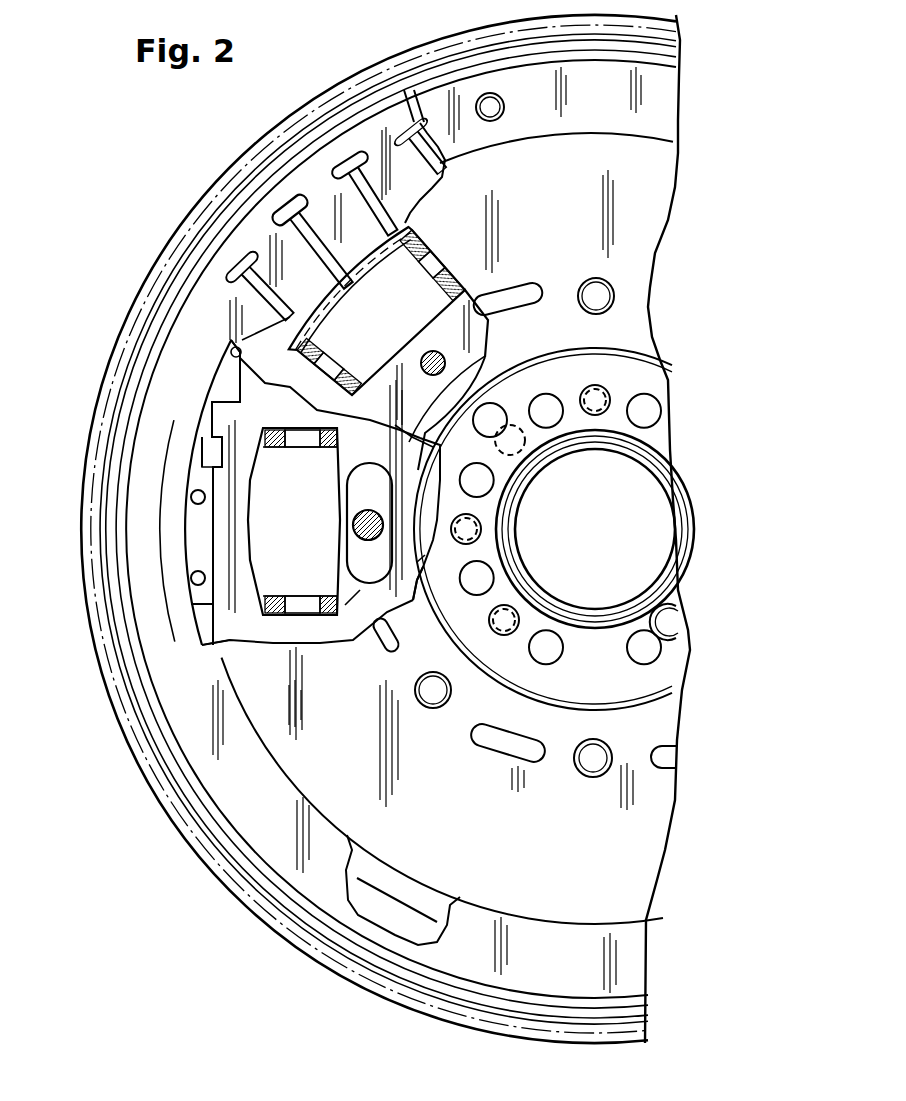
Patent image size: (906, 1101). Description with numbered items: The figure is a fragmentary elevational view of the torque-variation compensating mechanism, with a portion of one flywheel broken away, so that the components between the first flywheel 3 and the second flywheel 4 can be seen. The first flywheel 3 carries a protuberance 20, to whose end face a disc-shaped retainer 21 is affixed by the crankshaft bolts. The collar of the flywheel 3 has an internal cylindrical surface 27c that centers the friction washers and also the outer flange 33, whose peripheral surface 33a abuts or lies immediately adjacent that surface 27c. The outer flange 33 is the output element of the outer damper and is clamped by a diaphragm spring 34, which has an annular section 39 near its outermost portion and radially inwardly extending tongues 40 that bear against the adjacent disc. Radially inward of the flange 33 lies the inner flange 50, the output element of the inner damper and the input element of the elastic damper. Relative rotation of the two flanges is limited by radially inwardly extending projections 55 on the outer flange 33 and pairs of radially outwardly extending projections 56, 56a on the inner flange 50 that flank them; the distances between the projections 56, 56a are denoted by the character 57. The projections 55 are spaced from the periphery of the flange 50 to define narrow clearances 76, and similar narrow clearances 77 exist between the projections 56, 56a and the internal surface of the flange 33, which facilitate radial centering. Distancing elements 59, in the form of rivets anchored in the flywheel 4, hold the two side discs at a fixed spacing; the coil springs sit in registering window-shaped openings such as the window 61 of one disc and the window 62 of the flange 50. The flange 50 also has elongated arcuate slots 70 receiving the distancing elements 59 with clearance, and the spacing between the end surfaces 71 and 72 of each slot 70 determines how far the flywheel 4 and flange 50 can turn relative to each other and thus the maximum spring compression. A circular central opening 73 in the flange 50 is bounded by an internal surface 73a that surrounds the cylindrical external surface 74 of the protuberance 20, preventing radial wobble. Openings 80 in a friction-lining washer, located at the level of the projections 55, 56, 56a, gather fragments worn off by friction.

The first flywheel 3 is at (333, 101).
The second flywheel 4 is at (665, 97).
The protuberance 20 is at (427, 506).
The disc-shaped retainer 21 is at (630, 371).
The internal cylindrical surface 27c is at (212, 630).
The disc-shaped flange 33 is at (214, 642).
The peripheral surface 33a is at (165, 604).
The diaphragm spring 34 is at (302, 122).
The annular section 39 is at (408, 90).
The tongues 40 is at (405, 122).
The inner flange 50 is at (232, 342).
The radially inwardly extending projections 55 is at (285, 645).
The radially outwardly extending projection 56 is at (228, 352).
The radially outwardly extending projection 56a is at (200, 434).
The distances between projections 57 is at (214, 436).
The distancing elements 59 is at (614, 294).
The window-shaped opening 61 is at (380, 305).
The window-shaped opening 62 is at (260, 520).
The elongated arcuate slots 70 is at (366, 585).
The surface 71 is at (392, 468).
The surface 72 is at (345, 610).
The circular central opening 73 is at (417, 562).
The internal surface 73a is at (567, 569).
The cylindrical external surface 74 is at (403, 542).
The narrow clearances 76 is at (211, 606).
The narrow clearances 77 is at (226, 398).
The openings 80 is at (191, 497).